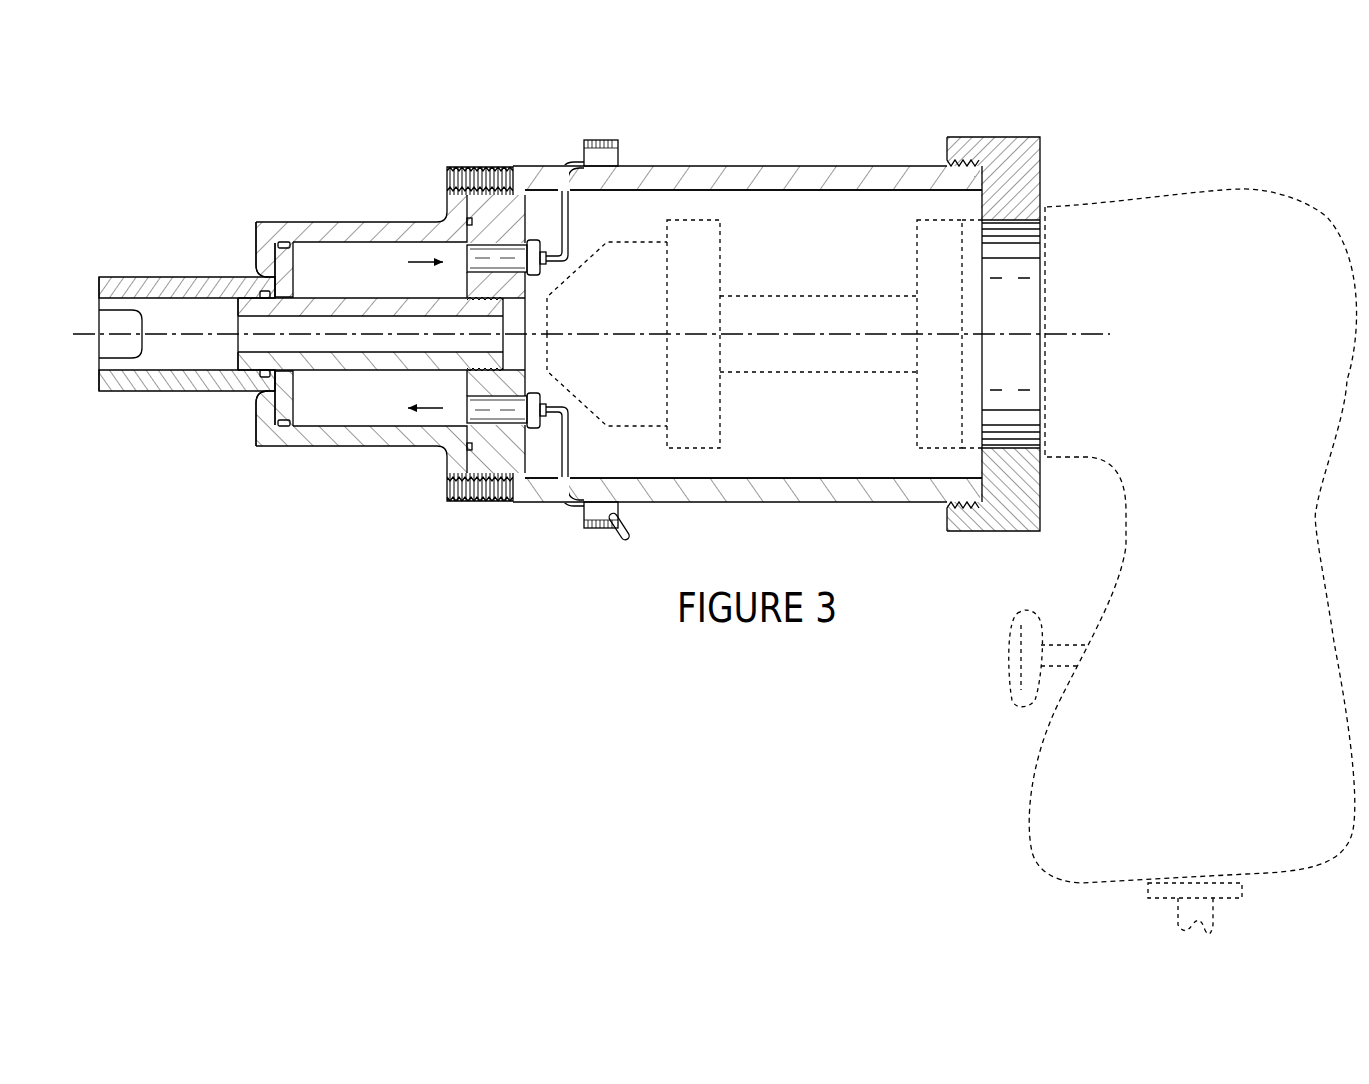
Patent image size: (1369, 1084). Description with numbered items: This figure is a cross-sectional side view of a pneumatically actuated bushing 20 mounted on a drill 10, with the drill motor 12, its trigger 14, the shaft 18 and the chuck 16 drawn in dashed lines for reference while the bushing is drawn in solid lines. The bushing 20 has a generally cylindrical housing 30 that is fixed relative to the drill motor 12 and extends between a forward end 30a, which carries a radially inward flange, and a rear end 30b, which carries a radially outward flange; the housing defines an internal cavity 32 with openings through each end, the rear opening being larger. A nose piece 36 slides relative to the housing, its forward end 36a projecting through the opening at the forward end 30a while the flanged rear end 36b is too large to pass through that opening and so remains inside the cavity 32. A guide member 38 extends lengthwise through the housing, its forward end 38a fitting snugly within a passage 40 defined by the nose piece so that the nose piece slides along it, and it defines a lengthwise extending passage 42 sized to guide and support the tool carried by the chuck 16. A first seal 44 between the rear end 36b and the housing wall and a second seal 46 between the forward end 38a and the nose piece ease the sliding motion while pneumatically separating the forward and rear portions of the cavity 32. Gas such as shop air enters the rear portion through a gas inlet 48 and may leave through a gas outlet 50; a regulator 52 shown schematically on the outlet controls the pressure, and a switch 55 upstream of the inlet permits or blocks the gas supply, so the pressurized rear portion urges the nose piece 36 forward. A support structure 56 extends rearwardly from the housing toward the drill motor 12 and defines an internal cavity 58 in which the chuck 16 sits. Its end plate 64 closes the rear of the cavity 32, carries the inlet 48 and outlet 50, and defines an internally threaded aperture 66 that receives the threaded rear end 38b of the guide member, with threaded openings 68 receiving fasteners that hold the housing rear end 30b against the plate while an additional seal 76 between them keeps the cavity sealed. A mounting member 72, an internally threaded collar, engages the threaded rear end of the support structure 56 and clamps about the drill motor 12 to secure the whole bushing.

The drill 10 is at (1195, 143).
The drill motor 12 is at (1303, 228).
The trigger 14 is at (1012, 618).
The chuck 16 is at (640, 242).
The shaft 18 is at (823, 303).
The bushing 20 is at (518, 145).
The housing 30 is at (355, 228).
The forward end 30a is at (262, 250).
The rear end 30b is at (458, 163).
The internal cavity 32 is at (408, 247).
The nose piece 36 is at (175, 280).
The forward end 36a is at (98, 283).
The rear end 36b is at (283, 270).
The guide member 38 is at (343, 362).
The forward end 38a is at (238, 362).
The rear end 38b is at (502, 362).
The passage 40 is at (190, 357).
The lengthwise extending passage 42 is at (372, 345).
The first seal 44 is at (282, 428).
The second seal 46 is at (262, 290).
The gas inlet 48 is at (493, 410).
The gas outlet 50 is at (495, 257).
The regulator 52 is at (608, 150).
The switch 55 is at (598, 513).
The support structure 56 is at (758, 172).
The internal cavity 58 is at (807, 205).
The end plate 64 is at (513, 223).
The aperture 66 is at (512, 308).
The threaded openings 68 is at (515, 487).
The mounting member 72 is at (1013, 147).
The additional seal 76 is at (467, 450).